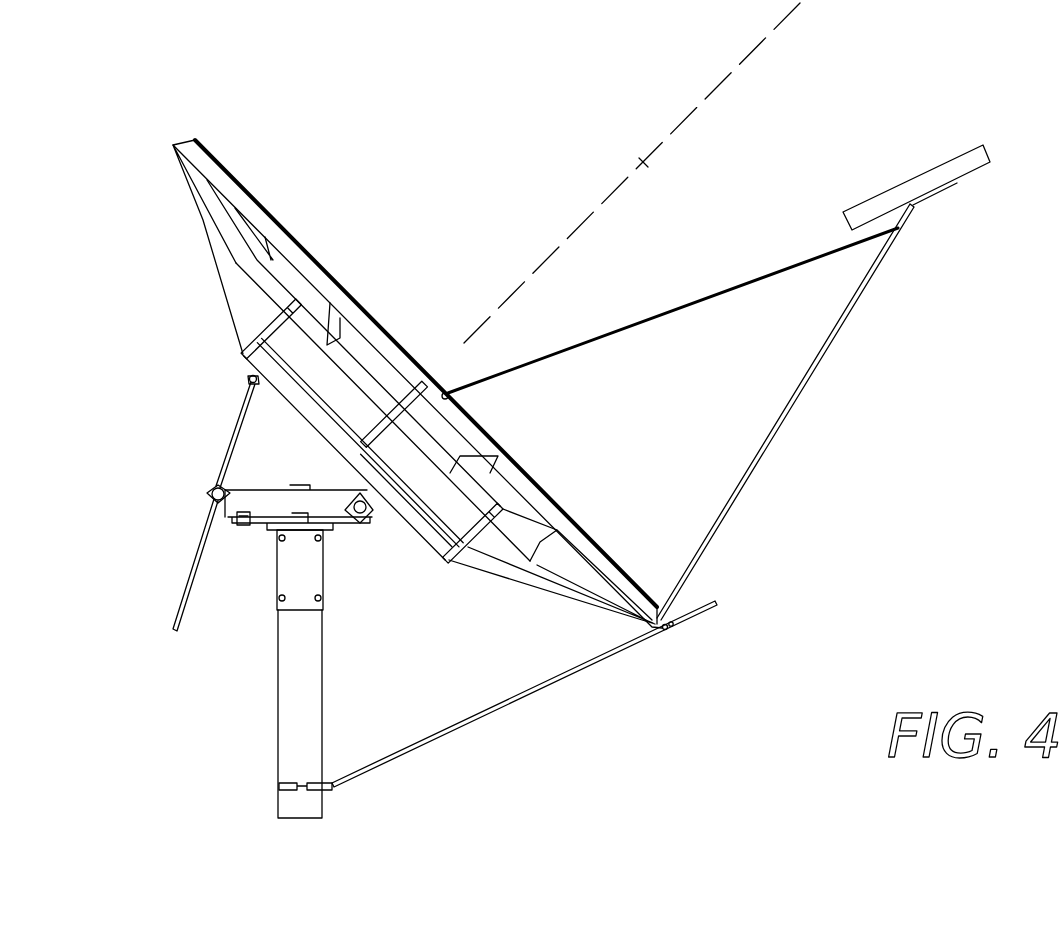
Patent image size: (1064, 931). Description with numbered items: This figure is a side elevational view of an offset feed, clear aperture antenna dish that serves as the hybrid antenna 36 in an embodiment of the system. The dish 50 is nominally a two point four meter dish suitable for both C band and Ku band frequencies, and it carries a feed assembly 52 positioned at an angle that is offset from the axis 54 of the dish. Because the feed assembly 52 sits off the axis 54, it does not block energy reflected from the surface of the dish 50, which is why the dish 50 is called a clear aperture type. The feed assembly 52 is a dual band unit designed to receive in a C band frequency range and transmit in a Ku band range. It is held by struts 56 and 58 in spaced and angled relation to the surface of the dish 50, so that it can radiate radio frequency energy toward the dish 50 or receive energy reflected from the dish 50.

The hybrid antenna 36 is at (581, 409).
The offset feed/clear aperture dish 50 is at (276, 161).
The feed assembly 52 is at (898, 183).
The axis 54 is at (648, 166).
The strut 56 is at (652, 318).
The strut 58 is at (820, 357).